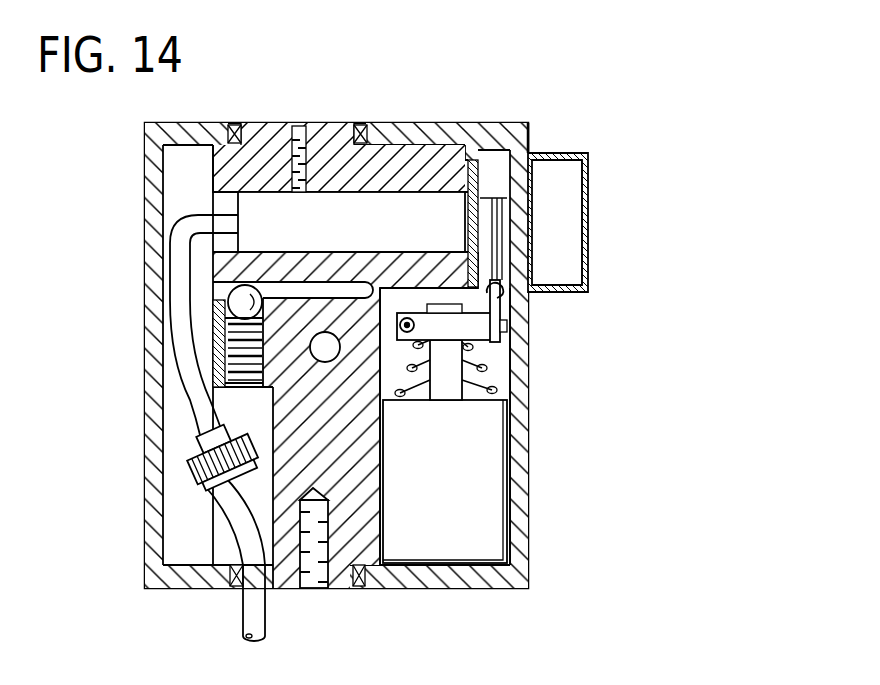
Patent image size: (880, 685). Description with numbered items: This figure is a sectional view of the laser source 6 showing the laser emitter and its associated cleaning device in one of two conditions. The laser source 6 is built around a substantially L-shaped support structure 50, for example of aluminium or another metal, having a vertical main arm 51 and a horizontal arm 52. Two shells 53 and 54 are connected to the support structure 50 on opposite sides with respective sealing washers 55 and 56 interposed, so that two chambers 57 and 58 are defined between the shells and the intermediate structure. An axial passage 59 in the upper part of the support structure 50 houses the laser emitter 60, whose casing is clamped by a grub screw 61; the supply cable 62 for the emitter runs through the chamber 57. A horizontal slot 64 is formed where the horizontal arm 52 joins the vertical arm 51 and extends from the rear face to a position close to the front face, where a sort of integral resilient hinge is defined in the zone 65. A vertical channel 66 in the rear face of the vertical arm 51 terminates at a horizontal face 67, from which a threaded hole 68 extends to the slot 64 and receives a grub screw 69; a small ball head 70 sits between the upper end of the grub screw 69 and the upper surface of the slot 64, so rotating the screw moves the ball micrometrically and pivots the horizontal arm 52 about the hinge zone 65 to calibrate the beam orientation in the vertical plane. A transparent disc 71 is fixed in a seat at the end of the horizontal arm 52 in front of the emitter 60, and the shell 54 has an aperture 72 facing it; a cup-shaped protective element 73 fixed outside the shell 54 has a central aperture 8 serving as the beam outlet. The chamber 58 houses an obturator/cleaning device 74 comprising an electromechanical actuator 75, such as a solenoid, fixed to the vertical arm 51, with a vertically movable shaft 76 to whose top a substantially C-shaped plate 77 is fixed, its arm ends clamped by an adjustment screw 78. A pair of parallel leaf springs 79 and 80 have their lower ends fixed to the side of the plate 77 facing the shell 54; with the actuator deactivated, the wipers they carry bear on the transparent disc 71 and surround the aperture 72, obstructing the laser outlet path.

The laser source 6 is at (241, 105).
The central aperture 8 is at (588, 207).
The support structure 50 is at (396, 468).
The vertical main arm 51 is at (381, 431).
The horizontal arm 52 is at (396, 123).
The shell 53 is at (160, 400).
The shell 54 is at (520, 420).
The sealing washer 55 is at (235, 123).
The sealing washer 56 is at (360, 123).
The chamber 57 is at (180, 490).
The chamber 58 is at (500, 367).
The axial passage 59 is at (264, 148).
The laser emitter 60 is at (335, 185).
The grub screw 61 is at (295, 128).
The supply cable 62 is at (178, 316).
The horizontal slot 64 is at (315, 284).
The hinge zone 65 is at (373, 276).
The vertical channel 66 is at (276, 410).
The horizontal face 67 is at (212, 420).
The threaded hole 68 is at (231, 338).
The grub screw 69 is at (222, 362).
The ball head 70 is at (229, 297).
The transparent disc 71 is at (527, 128).
The aperture 72 is at (532, 217).
The protective element 73 is at (589, 270).
The obturator/cleaning device 74 is at (486, 150).
The electromechanical actuator 75 is at (497, 492).
The shaft 76 is at (445, 383).
The plate 77 is at (420, 311).
The adjustment screw 78 is at (405, 318).
The leaf spring 79 is at (492, 292).
The leaf spring 80 is at (510, 300).